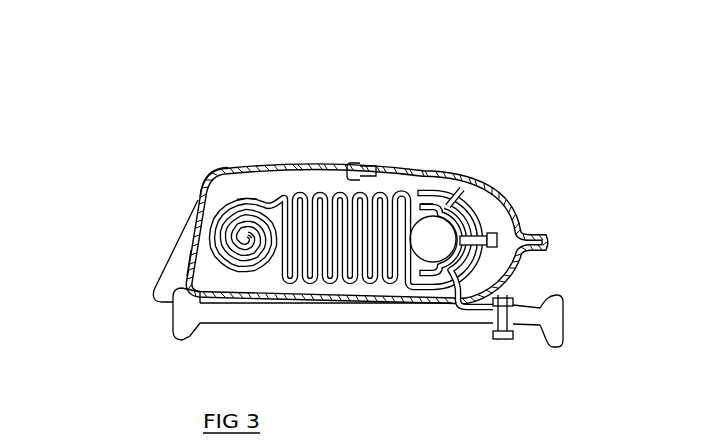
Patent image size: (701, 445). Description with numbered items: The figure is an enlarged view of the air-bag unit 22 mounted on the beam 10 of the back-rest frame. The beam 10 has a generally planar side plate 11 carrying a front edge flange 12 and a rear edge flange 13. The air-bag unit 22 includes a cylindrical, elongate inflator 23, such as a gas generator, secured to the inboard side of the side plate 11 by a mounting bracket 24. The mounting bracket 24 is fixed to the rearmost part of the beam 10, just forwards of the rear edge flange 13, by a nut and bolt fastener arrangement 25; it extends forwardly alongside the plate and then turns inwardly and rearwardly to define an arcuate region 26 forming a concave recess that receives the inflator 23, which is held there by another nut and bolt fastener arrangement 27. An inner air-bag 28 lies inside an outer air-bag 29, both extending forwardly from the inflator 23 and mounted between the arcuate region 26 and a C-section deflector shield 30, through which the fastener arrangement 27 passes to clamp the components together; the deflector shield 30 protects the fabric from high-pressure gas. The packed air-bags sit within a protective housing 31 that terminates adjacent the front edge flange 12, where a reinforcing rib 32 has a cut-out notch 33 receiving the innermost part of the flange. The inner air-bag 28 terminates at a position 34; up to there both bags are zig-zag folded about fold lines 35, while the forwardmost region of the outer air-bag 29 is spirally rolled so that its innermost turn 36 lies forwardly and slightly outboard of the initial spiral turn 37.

The beam 10 is at (350, 333).
The side plate 11 is at (415, 320).
The front edge flange 12 is at (181, 330).
The rear edge flange 13 is at (553, 327).
The air-bag unit 22 is at (510, 180).
The inflator 23 is at (470, 197).
The mounting bracket 24 is at (495, 269).
The nut and bolt fastener arrangement 25 is at (513, 328).
The arcuate region 26 is at (476, 184).
The nut and bolt fastener arrangement 27 is at (500, 238).
The inner air-bag 28 is at (458, 188).
The outer air-bag 29 is at (433, 231).
The deflector shield 30 is at (428, 203).
The housing 31 is at (207, 178).
The reinforcing rib 32 is at (356, 153).
The cut-out notch 33 is at (170, 303).
The terminal position of inner air-bag 34 is at (283, 196).
The fold lines 35 is at (305, 203).
The innermost turn 36 is at (246, 237).
The initial spiral turn 37 is at (267, 198).